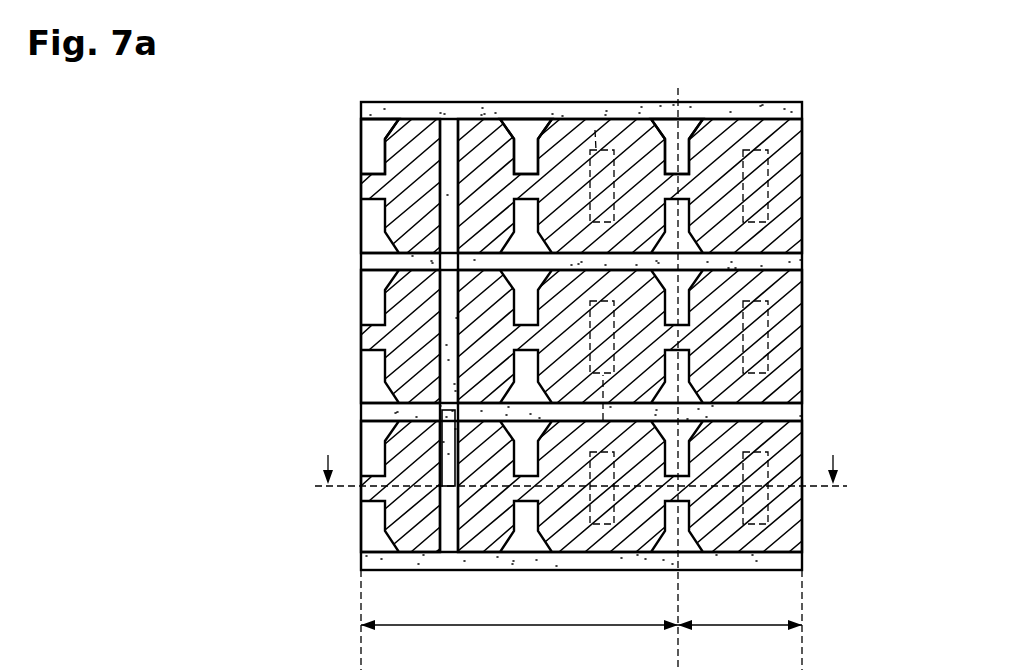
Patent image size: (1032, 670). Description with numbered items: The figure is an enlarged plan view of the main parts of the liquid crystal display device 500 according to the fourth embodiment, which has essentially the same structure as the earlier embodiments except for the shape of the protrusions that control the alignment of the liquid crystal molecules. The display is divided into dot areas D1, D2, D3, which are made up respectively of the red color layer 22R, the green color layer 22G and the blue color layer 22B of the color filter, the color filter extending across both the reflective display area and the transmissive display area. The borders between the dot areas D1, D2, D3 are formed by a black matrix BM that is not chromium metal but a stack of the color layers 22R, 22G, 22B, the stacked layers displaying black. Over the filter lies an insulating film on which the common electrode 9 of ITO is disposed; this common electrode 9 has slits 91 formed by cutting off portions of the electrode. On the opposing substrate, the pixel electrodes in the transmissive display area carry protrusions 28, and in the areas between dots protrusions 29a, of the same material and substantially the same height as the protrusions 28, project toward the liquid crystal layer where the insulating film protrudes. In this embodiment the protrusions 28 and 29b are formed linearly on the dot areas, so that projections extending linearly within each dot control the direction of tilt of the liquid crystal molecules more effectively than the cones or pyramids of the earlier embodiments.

The liquid crystal display device 500 is at (833, 107).
The common electrode 9 is at (780, 128).
The black matrix BM is at (371, 112).
The slit 91 is at (365, 127).
The red color layer 22R is at (400, 388).
The green color layer 22G is at (397, 243).
The blue color layer 22B is at (760, 224).
The protrusion 28 is at (767, 187).
The protrusion 29a is at (440, 410).
The protrusion 29b is at (595, 130).
The dot area D1 is at (403, 188).
The dot area D2 is at (403, 300).
The dot area D3 is at (385, 553).